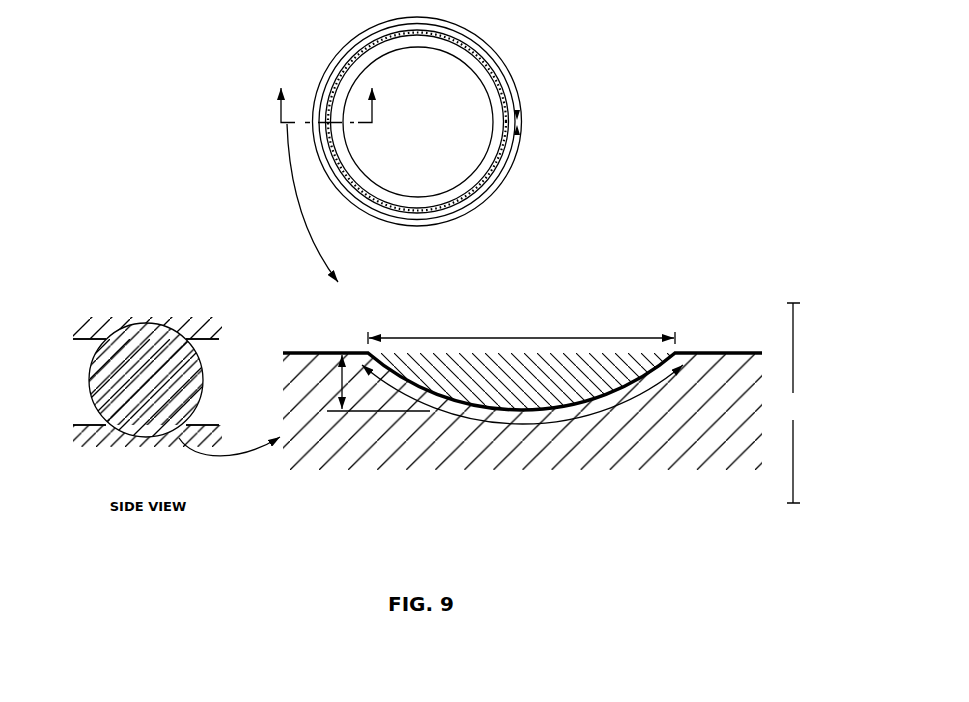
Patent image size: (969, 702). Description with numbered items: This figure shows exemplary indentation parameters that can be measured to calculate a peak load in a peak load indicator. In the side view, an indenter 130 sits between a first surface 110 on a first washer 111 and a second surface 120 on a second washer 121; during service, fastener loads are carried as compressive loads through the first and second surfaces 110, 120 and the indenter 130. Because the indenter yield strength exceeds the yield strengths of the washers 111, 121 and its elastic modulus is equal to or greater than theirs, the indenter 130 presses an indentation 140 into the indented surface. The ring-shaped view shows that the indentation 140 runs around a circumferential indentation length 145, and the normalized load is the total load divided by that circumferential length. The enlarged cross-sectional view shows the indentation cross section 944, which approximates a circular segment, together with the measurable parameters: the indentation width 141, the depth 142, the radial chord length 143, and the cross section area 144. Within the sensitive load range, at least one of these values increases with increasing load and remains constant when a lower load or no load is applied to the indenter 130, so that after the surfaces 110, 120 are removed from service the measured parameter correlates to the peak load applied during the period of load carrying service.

The first surface 110 is at (513, 73).
The second surface 120 is at (125, 450).
The first washer 111 is at (83, 342).
The second washer 121 is at (83, 423).
The indenter 130 is at (204, 398).
The indentation 140 is at (330, 80).
The indentation width 141 is at (521, 332).
The indentation depth 142 is at (337, 381).
The radial chord length 143 is at (580, 424).
The cross section area 144 is at (457, 365).
The circumferential indentation length 145 is at (510, 163).
The indentation cross section 944 is at (793, 403).